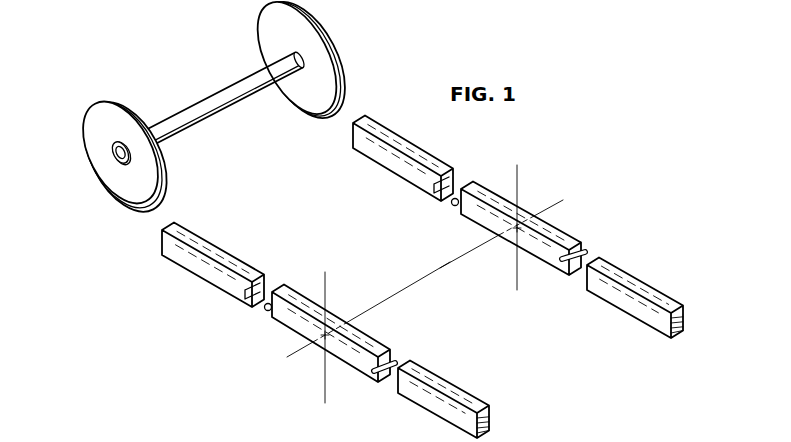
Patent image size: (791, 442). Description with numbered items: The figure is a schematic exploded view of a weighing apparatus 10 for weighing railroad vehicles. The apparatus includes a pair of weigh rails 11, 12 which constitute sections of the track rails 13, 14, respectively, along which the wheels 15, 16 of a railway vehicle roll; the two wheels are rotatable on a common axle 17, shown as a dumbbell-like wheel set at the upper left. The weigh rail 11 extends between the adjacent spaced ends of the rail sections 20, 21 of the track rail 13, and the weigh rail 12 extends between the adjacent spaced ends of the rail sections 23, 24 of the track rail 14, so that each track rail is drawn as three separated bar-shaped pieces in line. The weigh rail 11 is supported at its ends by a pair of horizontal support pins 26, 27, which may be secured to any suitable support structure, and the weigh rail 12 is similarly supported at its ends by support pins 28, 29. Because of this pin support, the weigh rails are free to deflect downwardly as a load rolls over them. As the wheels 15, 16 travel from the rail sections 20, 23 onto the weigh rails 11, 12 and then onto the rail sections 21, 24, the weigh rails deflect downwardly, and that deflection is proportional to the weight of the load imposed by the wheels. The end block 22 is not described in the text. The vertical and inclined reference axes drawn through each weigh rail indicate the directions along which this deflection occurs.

The weighing apparatus 10 is at (653, 148).
The weigh rail 11 is at (363, 368).
The weigh rail 12 is at (551, 264).
The track rail 13 is at (168, 265).
The track rail 14 is at (341, 166).
The wheel 15 is at (92, 172).
The wheel 16 is at (334, 38).
The common axle 17 is at (218, 90).
The rail section 20 is at (240, 292).
The rail section 21 is at (443, 421).
The end block 22 is at (237, 439).
The rail section 23 is at (410, 176).
The rail section 24 is at (642, 313).
The support pin 26 is at (268, 310).
The support pin 27 is at (396, 362).
The support pin 28 is at (456, 205).
The support pin 29 is at (589, 252).